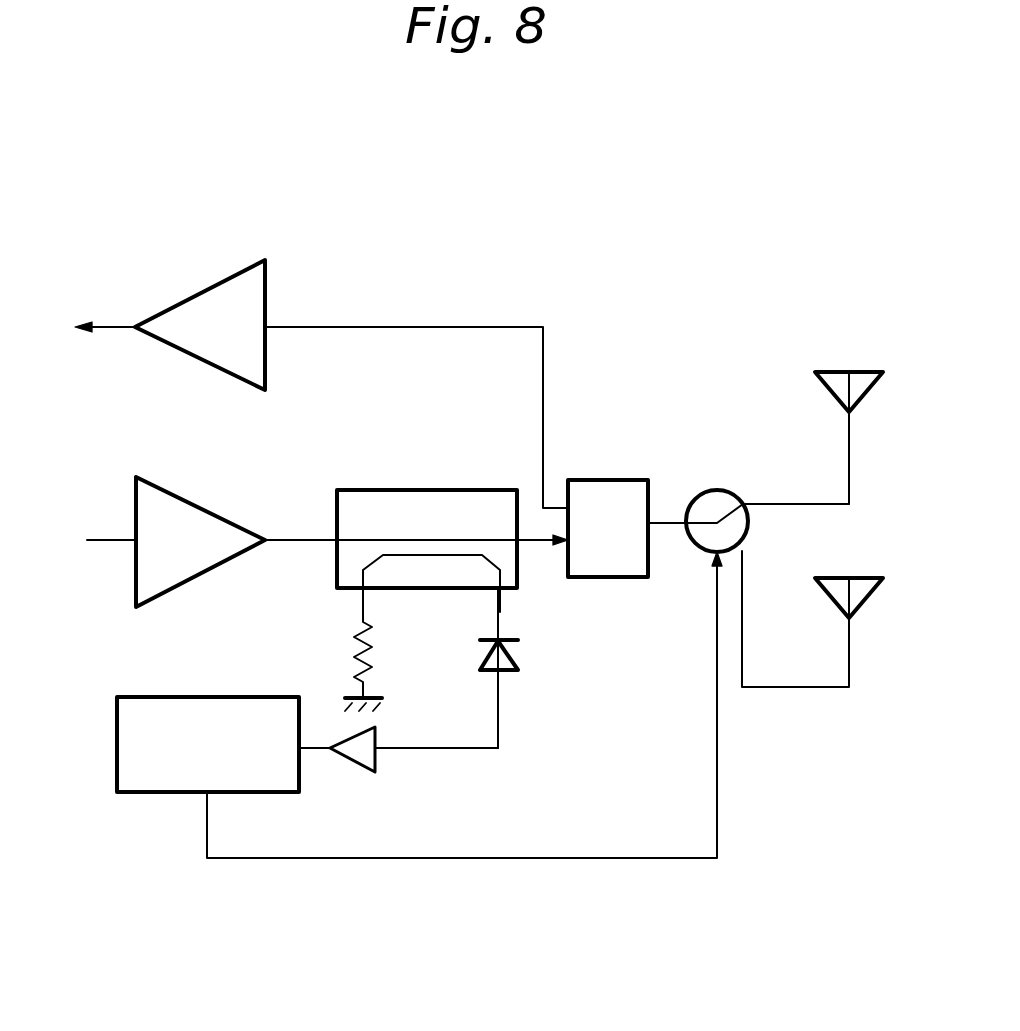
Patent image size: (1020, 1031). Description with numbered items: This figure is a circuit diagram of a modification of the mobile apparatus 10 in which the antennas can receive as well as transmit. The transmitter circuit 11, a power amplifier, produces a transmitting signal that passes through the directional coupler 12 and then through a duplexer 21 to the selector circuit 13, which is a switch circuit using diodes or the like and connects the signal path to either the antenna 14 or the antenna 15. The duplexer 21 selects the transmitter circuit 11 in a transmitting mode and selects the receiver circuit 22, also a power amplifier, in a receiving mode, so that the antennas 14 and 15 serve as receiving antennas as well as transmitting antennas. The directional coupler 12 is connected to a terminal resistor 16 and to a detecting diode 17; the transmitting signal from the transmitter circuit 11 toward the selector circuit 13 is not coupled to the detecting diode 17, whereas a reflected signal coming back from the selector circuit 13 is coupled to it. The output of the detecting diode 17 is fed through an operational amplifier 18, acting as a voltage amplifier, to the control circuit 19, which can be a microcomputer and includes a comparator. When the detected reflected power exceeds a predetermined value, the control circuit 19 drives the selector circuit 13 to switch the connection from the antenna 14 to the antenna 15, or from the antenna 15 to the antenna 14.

The mobile apparatus 10 is at (726, 360).
The transmitter circuit (power amplifier) 11 is at (190, 500).
The directional coupler 12 is at (486, 488).
The selector circuit 13 is at (750, 525).
The antenna 14 is at (868, 392).
The antenna 15 is at (868, 597).
The terminal resistor 16 is at (356, 650).
The detecting diode 17 is at (516, 658).
The operational amplifier 18 is at (366, 773).
The control circuit 19 is at (206, 696).
The duplexer 21 is at (610, 478).
The receiver circuit (power amplifier) 22 is at (268, 277).